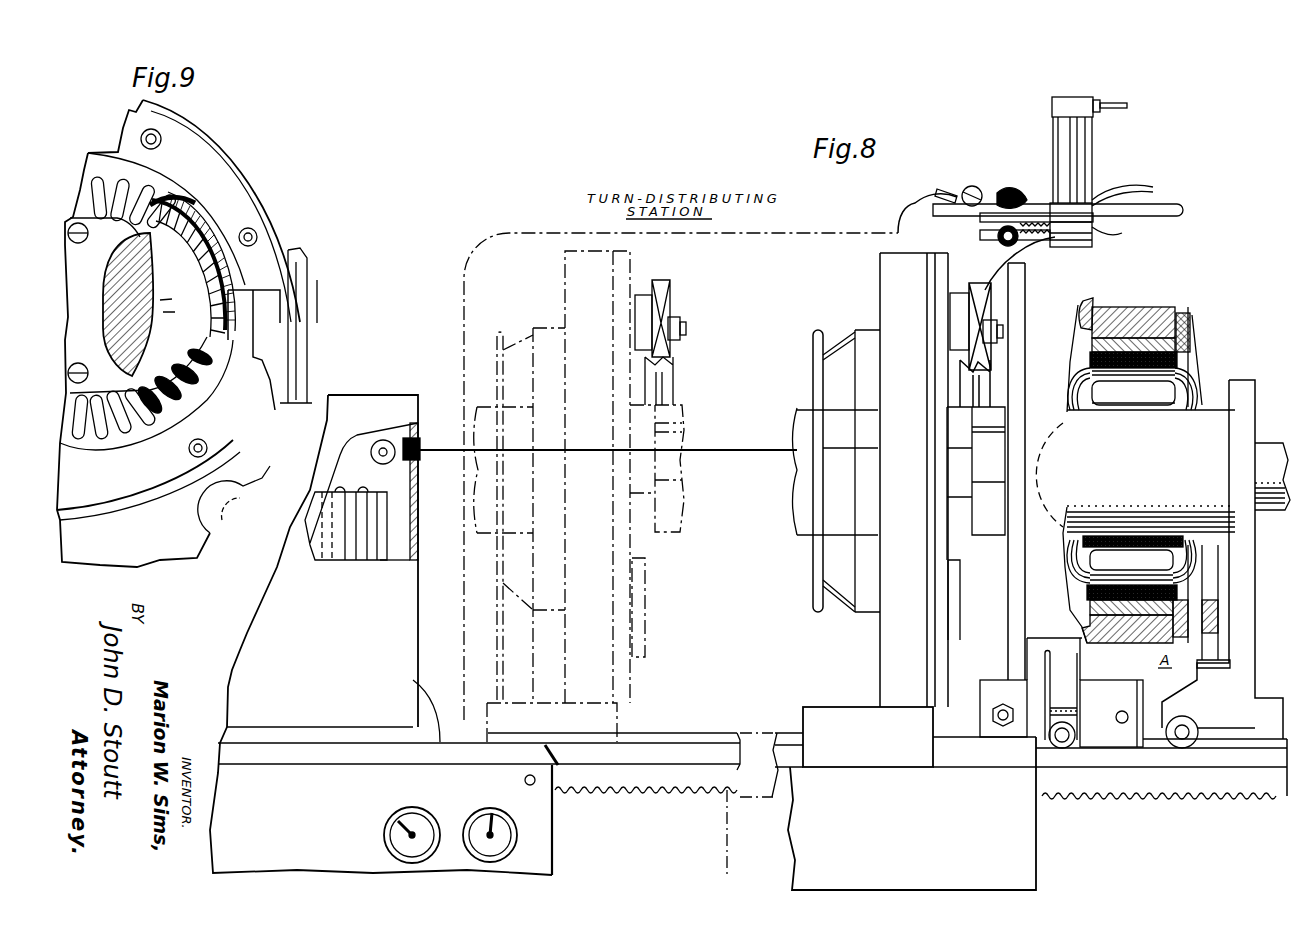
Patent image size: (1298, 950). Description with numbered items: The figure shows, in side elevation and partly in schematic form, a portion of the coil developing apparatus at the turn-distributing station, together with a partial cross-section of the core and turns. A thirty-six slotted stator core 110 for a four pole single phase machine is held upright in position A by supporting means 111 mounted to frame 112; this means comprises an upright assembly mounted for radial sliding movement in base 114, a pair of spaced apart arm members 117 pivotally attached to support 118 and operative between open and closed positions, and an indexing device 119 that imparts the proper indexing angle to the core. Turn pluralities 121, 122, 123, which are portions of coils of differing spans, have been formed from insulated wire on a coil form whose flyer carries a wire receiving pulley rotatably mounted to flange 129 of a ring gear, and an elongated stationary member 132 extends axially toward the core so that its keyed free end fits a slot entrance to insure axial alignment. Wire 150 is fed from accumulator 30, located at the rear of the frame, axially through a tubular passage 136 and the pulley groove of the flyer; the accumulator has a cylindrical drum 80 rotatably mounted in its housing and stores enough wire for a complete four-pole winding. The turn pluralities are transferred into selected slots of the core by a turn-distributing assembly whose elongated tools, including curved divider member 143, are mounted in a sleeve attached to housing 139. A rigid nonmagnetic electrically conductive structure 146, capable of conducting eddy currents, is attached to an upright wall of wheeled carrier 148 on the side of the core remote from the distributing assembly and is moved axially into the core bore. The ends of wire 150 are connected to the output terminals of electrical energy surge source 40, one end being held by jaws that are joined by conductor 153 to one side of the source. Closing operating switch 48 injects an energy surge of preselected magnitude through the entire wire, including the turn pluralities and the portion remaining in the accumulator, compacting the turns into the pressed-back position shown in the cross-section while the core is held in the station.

In FIG. 8, the accumulator means 30 is at (390, 393).
In FIG. 8, the electrical energy surge source 40 is at (475, 801).
In FIG. 8, the operating switch 48 is at (524, 780).
In FIG. 8, the cylindrical drum 80 is at (380, 548).
In FIG. 9, the stator core 110 is at (94, 152).
In FIG. 8, the stator core 110 is at (1180, 360).
In FIG. 8, the supporting means 111 is at (1145, 663).
In FIG. 8, the frame 112 is at (1146, 780).
In FIG. 8, the base 114 is at (1146, 696).
In FIG. 9, the arm members 117 is at (235, 307).
In FIG. 8, the arm members 117 is at (1190, 328).
In FIG. 8, the support 118 is at (1219, 617).
In FIG. 8, the indexing device 119 is at (1078, 718).
In FIG. 9, the turn plurality 121 is at (192, 250).
In FIG. 9, the turn plurality 122 is at (190, 222).
In FIG. 9, the turn plurality 123 is at (168, 205).
In FIG. 8, the turn plurality 123 is at (1190, 560).
In FIG. 8, the flange 129 is at (642, 290).
In FIG. 9, the elongated stationary member 132 is at (197, 290).
In FIG. 8, the tubular passage 136 is at (659, 388).
In FIG. 8, the housing 139 is at (800, 510).
In FIG. 8, the divider member 143 is at (1267, 446).
In FIG. 9, the rigid nonmagnetic electrically conductive structure 146 is at (122, 268).
In FIG. 8, the rigid nonmagnetic electrically conductive structure 146 is at (1210, 410).
In FIG. 8, the wheeled carrier 148 is at (1267, 703).
In FIG. 8, the wire 150 is at (747, 448).
In FIG. 8, the conductor 153 is at (898, 210).